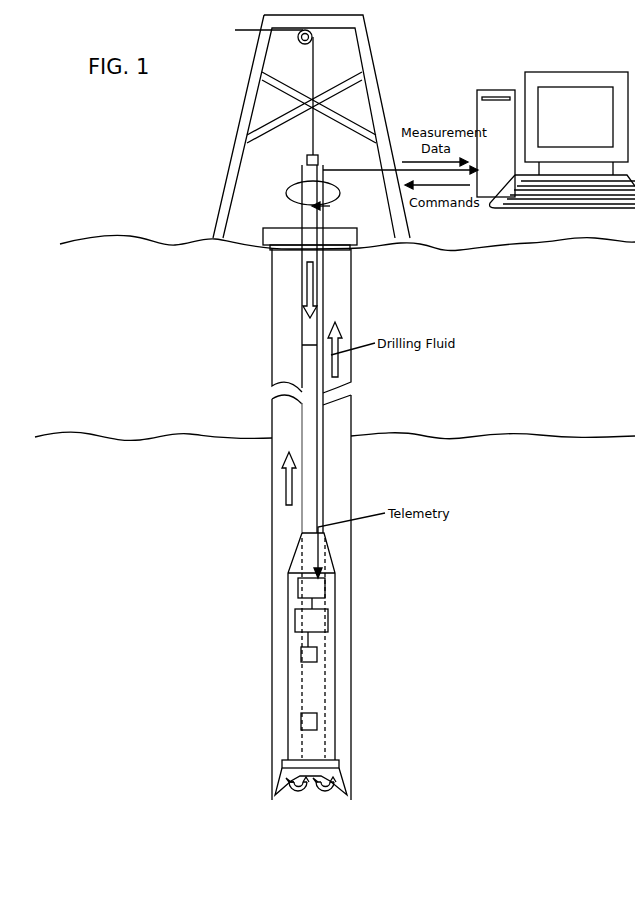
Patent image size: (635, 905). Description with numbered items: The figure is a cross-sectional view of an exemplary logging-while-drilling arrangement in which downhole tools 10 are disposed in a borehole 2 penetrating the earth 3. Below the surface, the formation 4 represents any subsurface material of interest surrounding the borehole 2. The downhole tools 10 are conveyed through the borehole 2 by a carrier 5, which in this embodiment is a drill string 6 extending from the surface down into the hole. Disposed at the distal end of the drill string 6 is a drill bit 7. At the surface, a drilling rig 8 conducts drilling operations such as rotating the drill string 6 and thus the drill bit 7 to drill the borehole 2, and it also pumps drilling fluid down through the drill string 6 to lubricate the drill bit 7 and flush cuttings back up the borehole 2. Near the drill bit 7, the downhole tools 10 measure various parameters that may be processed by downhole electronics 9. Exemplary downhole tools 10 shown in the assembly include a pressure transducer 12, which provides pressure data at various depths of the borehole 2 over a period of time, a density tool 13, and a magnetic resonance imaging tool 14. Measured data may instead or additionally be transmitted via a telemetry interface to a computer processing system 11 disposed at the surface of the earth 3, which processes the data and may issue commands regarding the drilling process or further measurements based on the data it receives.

The borehole 2 is at (281, 358).
The earth 3 is at (347, 266).
The formation 4 is at (335, 460).
The carrier 5 is at (301, 424).
The drill string 6 is at (301, 327).
The drill bit 7 is at (287, 778).
The drilling rig 8 is at (203, 189).
The downhole electronics 9 is at (311, 593).
The downhole tools 10 is at (288, 604).
The computer processing system 11 is at (492, 92).
The pressure transducer 12 is at (311, 628).
The density tool 13 is at (300, 655).
The magnetic resonance imaging tool 14 is at (300, 725).